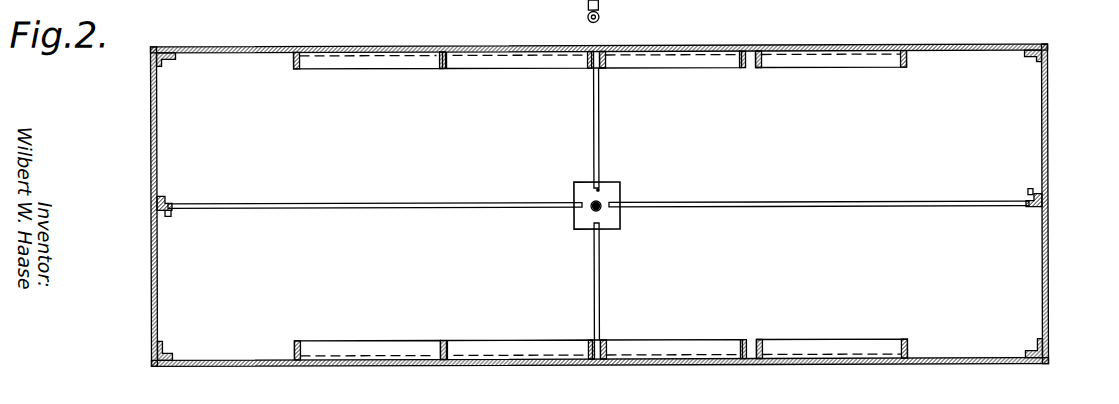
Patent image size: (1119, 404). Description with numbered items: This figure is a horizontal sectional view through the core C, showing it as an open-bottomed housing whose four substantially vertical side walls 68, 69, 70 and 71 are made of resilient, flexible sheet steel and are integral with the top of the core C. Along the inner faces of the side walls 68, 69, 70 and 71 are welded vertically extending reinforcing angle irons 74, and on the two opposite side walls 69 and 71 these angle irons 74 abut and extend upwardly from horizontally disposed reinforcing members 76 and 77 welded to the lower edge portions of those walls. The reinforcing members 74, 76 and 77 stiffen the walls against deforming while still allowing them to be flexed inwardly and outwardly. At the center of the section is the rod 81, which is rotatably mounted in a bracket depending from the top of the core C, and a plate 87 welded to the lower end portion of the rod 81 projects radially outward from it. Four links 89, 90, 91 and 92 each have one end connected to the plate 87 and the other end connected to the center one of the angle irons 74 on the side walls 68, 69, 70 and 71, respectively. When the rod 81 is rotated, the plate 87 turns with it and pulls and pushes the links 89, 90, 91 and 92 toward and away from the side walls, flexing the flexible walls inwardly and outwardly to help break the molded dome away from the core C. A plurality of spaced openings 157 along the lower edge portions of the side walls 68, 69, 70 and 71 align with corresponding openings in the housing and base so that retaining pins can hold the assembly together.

The openings 157 is at (214, 46).
The side wall 68 is at (158, 147).
The side wall 69 is at (444, 51).
The side wall 70 is at (1048, 150).
The side wall 71 is at (503, 365).
The angle irons 74 is at (286, 62).
The horizontally disposed reinforcing member 76 is at (662, 60).
The horizontally disposed reinforcing member 77 is at (700, 345).
The rod 81 is at (604, 214).
The plate 87 is at (616, 192).
The link 89 is at (492, 202).
The link 90 is at (594, 151).
The link 91 is at (814, 202).
The link 92 is at (600, 298).
The core C is at (1060, 47).